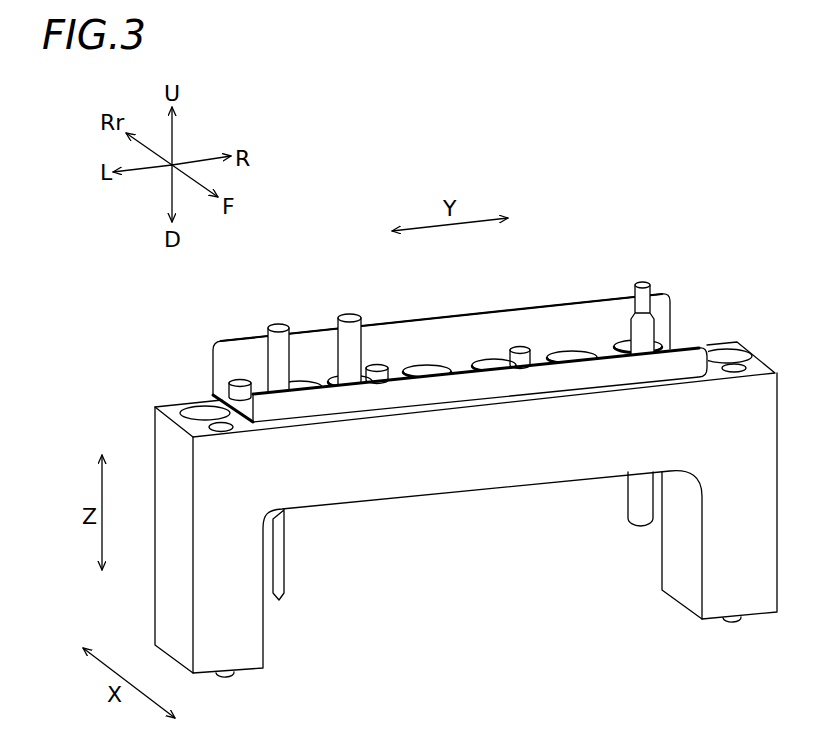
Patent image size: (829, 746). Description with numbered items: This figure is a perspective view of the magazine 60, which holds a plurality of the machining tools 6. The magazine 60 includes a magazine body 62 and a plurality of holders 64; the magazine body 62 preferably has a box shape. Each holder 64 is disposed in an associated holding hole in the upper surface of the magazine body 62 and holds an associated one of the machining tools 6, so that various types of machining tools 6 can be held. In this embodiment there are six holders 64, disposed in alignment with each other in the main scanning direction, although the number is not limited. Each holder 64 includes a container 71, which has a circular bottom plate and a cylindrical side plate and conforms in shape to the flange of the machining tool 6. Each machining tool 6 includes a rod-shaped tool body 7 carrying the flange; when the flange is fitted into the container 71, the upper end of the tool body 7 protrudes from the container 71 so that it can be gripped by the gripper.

The magazine 60 is at (460, 346).
The magazine body 62 is at (711, 340).
The machining tool 6 is at (277, 311).
The tool body 7 is at (266, 357).
The holder 64 is at (337, 377).
The container 71 is at (418, 366).